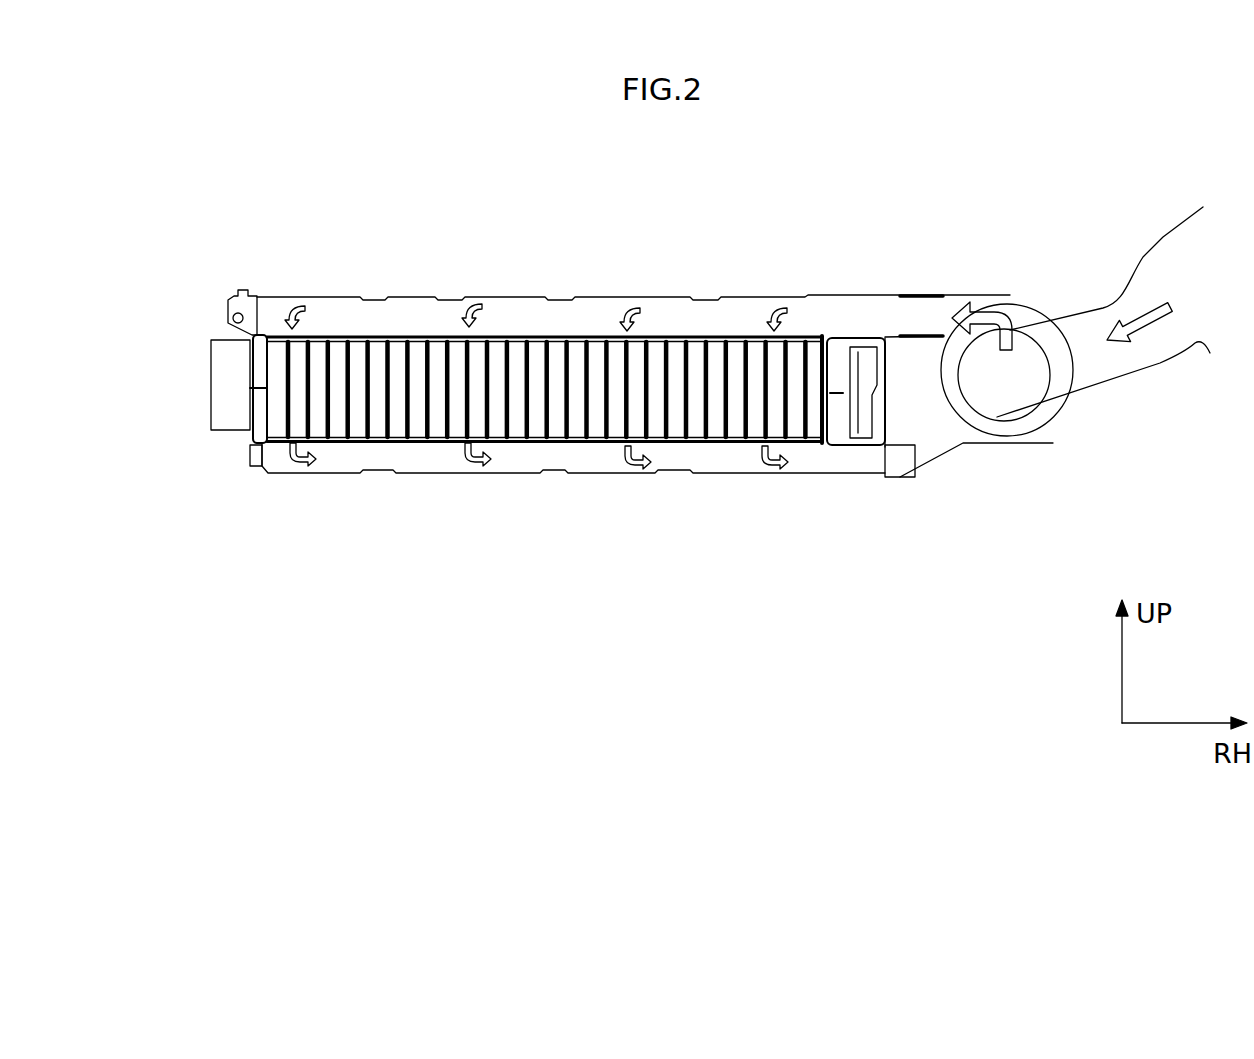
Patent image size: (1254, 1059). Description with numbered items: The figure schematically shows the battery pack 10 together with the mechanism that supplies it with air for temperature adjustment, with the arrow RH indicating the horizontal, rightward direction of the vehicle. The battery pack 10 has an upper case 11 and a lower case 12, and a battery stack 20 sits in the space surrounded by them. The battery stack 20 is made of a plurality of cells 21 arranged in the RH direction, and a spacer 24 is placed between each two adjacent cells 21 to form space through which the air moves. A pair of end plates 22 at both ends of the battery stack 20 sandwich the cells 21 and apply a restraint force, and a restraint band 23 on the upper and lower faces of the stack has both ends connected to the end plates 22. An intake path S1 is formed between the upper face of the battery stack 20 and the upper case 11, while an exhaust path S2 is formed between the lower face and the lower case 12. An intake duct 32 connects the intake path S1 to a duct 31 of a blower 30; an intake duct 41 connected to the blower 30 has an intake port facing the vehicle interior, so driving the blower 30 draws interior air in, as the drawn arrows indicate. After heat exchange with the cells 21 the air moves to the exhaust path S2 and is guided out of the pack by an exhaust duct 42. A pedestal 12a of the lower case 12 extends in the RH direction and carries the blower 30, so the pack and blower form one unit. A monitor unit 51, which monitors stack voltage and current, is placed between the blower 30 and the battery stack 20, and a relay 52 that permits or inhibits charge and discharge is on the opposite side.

The battery pack 10 is at (619, 361).
The upper case 11 is at (520, 296).
The lower case 12 is at (645, 473).
The pedestal 12a is at (975, 445).
The battery stack 20 is at (544, 401).
The cell 21 is at (557, 417).
The end plate 22 is at (265, 410).
The restraint band 23 is at (600, 336).
The spacer 24 is at (737, 355).
The blower 30 is at (1035, 298).
The duct 31 is at (955, 296).
The intake duct 32 is at (895, 297).
The intake duct 41 is at (1125, 385).
The exhaust duct 42 is at (903, 445).
The monitor unit 51 is at (867, 364).
The relay 52 is at (226, 388).
The intake path S1 is at (690, 316).
The exhaust path S2 is at (514, 463).